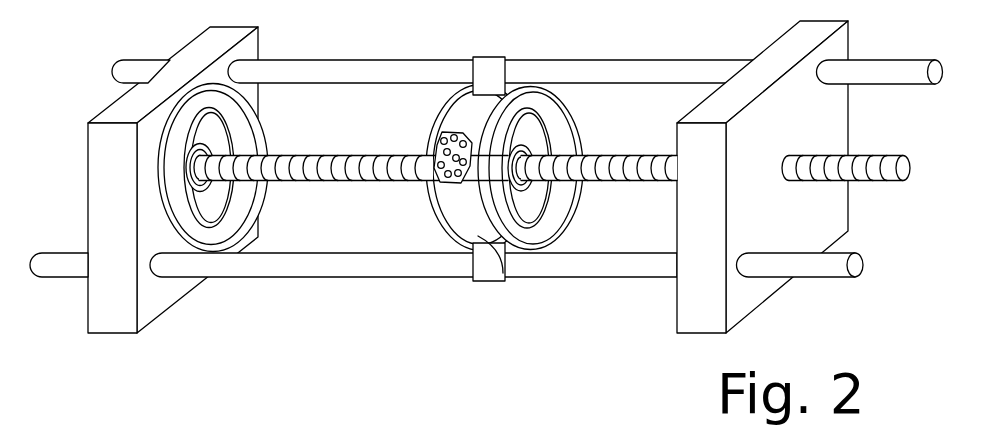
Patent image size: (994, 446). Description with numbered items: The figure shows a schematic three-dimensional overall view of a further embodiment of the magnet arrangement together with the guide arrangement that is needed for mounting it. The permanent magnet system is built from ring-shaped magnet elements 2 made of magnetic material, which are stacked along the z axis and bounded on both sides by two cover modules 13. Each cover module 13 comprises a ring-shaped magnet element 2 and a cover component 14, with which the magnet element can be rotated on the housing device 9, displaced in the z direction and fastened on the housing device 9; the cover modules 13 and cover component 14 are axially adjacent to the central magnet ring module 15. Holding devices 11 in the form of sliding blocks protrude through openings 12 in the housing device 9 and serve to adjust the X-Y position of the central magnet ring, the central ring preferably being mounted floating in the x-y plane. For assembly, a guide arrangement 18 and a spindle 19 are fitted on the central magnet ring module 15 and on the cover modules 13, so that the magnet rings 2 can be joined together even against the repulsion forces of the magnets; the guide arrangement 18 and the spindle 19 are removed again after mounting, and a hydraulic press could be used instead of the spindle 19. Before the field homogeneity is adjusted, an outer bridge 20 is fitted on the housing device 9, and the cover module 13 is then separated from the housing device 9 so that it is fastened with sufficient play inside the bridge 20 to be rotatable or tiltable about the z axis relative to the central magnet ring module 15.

The ring-shaped magnet element 2 is at (150, 129).
The housing device 9 is at (578, 127).
The holding device 11 is at (453, 190).
The opening 12 is at (538, 276).
The cover module 13 is at (177, 145).
The cover component 14 is at (165, 180).
The central magnet ring module 15 is at (490, 190).
The guide arrangement 18 is at (343, 75).
The spindle 19 is at (903, 180).
The outer bridge 20 is at (487, 65).